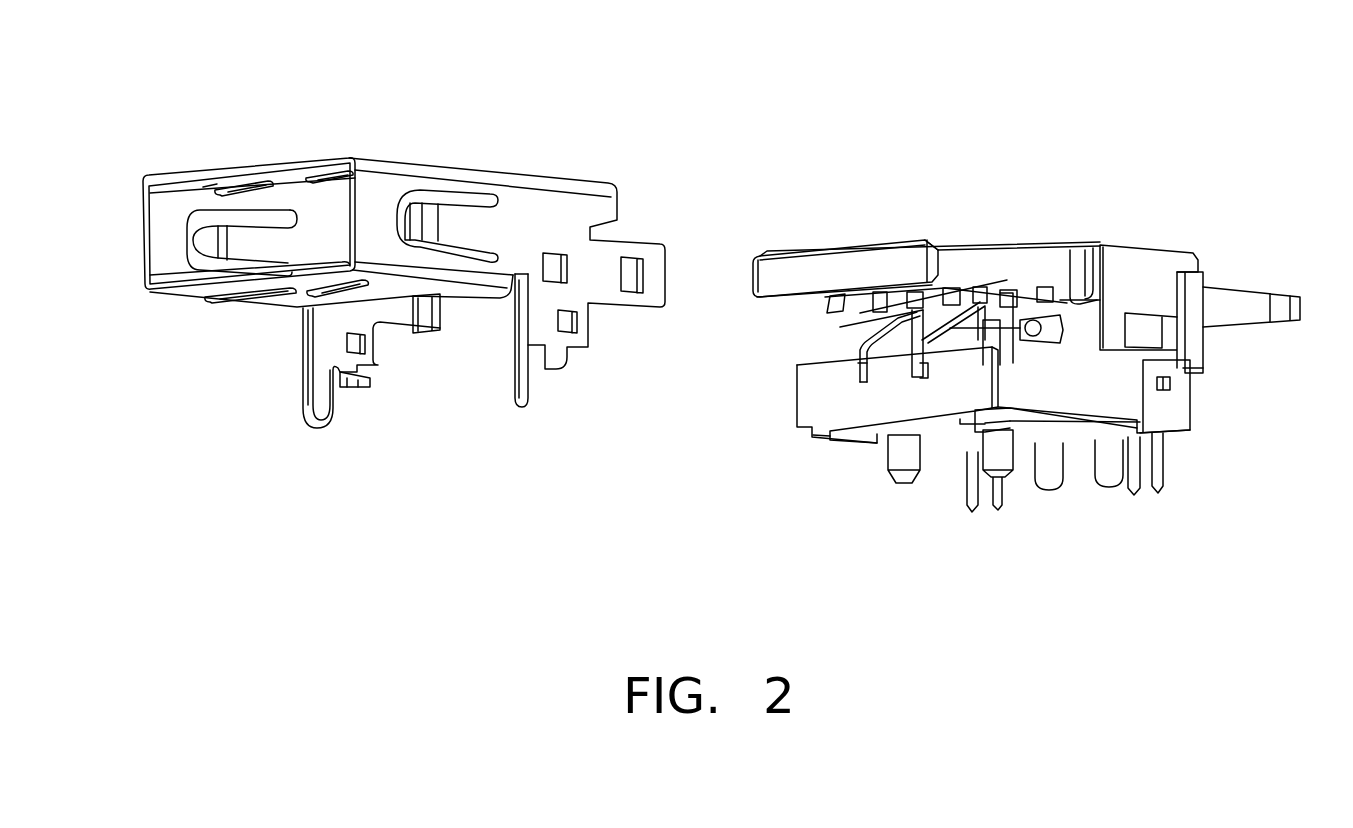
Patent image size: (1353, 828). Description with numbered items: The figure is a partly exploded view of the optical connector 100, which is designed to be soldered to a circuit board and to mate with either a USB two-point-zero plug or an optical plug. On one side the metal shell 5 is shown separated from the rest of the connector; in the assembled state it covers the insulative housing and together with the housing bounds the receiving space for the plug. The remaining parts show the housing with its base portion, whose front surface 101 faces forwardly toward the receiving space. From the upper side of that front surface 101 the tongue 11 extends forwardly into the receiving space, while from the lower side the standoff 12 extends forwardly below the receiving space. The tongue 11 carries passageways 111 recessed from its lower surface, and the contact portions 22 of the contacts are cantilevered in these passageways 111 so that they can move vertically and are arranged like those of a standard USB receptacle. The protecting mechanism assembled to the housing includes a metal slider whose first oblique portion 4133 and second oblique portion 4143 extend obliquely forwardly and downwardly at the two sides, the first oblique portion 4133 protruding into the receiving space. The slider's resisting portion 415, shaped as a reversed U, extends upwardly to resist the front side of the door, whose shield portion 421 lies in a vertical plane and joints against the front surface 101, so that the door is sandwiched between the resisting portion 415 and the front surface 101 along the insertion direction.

The optical connector 100 is at (1193, 183).
The metal shell 5 is at (408, 170).
The tongue 11 is at (840, 252).
The standoff 12 is at (850, 407).
The contact portion 22 is at (968, 295).
The first oblique portion 4133 is at (950, 307).
The second oblique portion 4143 is at (873, 334).
The passageways 111 is at (1000, 293).
The resisting portion 415 is at (1072, 300).
The front surface 101 is at (1082, 315).
The shield portion 421 is at (1063, 328).